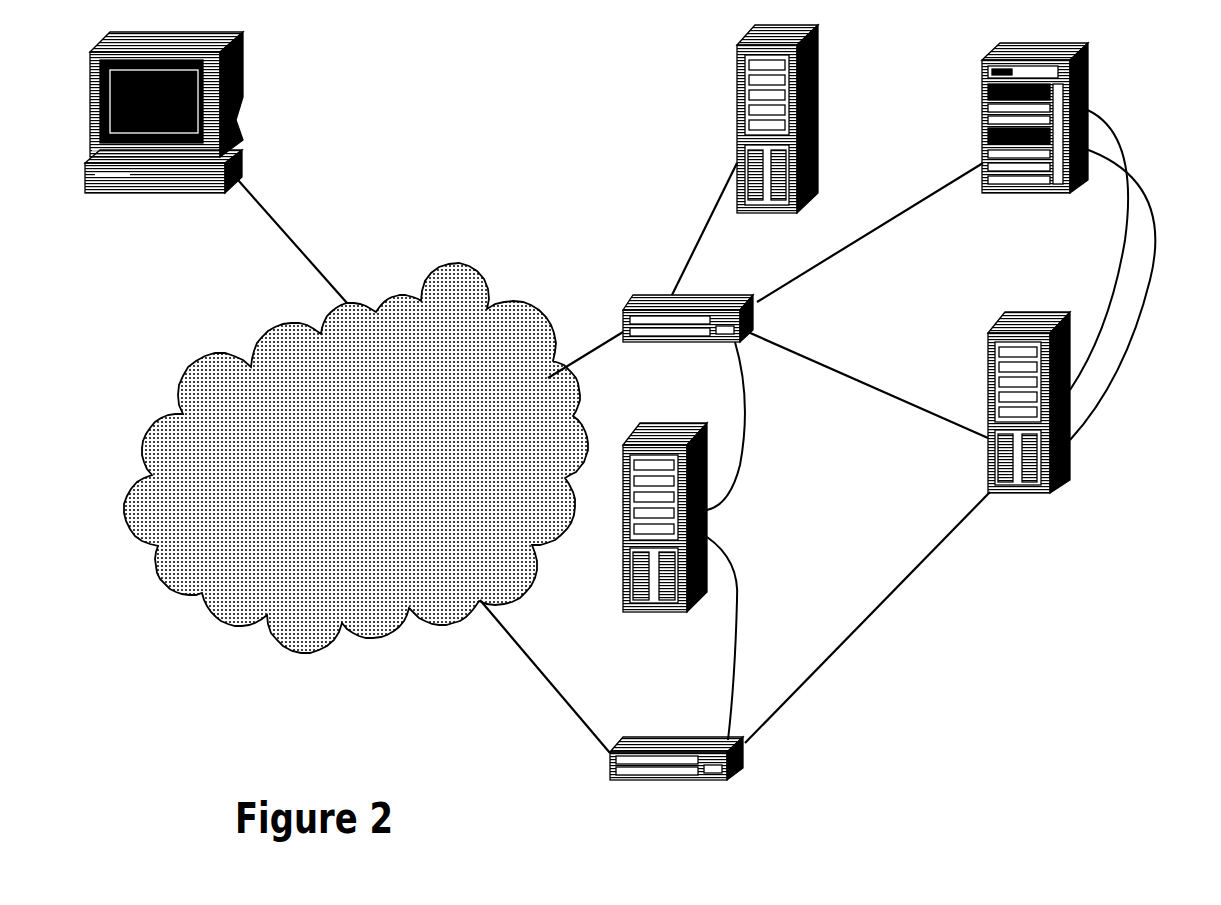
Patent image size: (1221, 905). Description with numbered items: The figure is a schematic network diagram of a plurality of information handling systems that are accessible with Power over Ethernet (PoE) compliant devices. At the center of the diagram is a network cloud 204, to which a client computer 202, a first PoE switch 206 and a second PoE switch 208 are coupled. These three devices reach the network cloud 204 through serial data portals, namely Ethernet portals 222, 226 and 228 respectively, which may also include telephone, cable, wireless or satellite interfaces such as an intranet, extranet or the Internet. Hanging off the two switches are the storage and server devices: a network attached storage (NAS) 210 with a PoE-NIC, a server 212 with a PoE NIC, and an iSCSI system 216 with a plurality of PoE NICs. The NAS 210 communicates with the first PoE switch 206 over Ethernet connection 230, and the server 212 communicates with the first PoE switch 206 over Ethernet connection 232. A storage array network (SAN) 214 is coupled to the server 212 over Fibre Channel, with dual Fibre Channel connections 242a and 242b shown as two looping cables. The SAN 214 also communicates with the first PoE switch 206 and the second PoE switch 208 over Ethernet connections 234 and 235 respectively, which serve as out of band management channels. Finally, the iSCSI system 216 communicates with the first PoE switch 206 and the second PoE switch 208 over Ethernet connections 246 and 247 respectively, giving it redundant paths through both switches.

The client computer 202 is at (243, 92).
The network cloud 204 is at (453, 265).
The first PoE switch 206 is at (640, 295).
The second PoE switch 208 is at (610, 772).
The network attached storage (NAS) 210 is at (735, 148).
The server 212 is at (982, 145).
The storage array network (SAN) 214 is at (988, 365).
The iSCSI system 216 is at (623, 585).
The Ethernet portal 222 is at (312, 260).
The Ethernet portal 226 is at (592, 337).
The Ethernet portal 228 is at (533, 667).
The Ethernet connection 230 is at (705, 217).
The Ethernet connection 232 is at (897, 218).
The Ethernet connection 234 is at (877, 392).
The Ethernet connection 235 is at (878, 613).
The Fibre Channel connection 242a is at (1125, 240).
The Fibre Channel connection 242b is at (1140, 300).
The Ethernet connection 246 is at (745, 458).
The Ethernet connection 247 is at (737, 590).